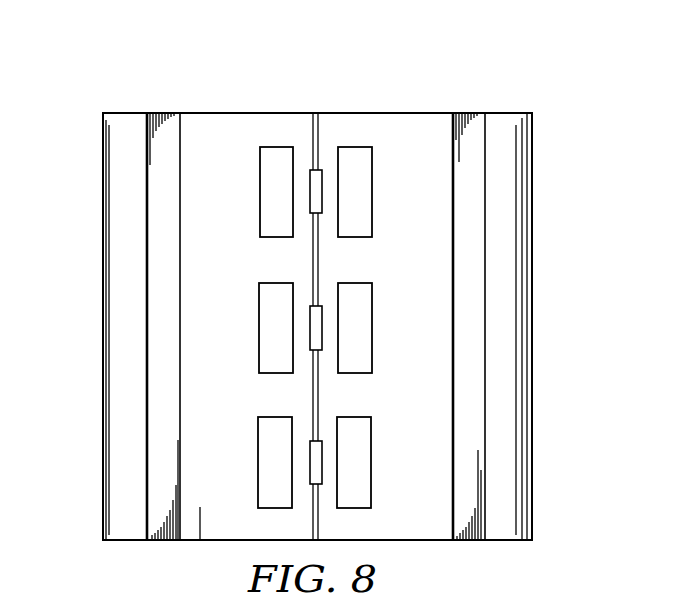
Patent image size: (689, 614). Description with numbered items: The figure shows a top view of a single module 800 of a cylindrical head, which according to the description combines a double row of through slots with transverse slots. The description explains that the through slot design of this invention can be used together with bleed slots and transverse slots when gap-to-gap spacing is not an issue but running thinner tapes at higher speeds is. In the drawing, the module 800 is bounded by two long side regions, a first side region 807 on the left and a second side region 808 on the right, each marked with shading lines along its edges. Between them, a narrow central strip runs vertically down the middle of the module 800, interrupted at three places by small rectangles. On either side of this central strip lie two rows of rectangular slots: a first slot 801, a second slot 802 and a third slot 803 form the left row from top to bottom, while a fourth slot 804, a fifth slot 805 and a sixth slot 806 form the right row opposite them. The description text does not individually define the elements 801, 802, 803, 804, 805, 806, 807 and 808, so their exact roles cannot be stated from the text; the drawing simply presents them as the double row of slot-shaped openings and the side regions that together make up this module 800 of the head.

The connector module 800 is at (132, 60).
The contact pad 801 is at (265, 192).
The contact pad 802 is at (265, 327).
The contact pad 803 is at (265, 462).
The contact pad 804 is at (367, 192).
The contact pad 805 is at (367, 327).
The contact pad 806 is at (365, 463).
The side rail 807 is at (165, 258).
The side rail 808 is at (467, 260).